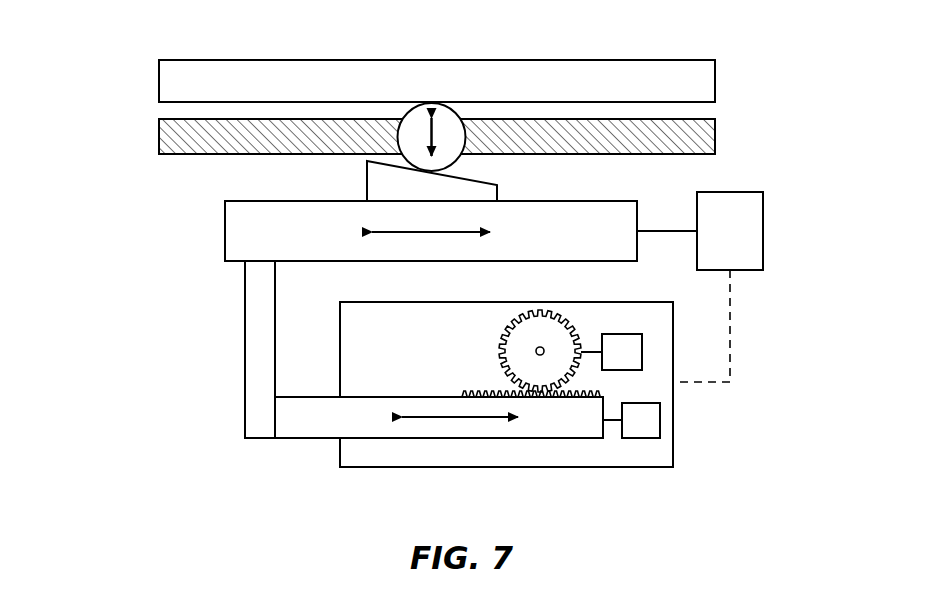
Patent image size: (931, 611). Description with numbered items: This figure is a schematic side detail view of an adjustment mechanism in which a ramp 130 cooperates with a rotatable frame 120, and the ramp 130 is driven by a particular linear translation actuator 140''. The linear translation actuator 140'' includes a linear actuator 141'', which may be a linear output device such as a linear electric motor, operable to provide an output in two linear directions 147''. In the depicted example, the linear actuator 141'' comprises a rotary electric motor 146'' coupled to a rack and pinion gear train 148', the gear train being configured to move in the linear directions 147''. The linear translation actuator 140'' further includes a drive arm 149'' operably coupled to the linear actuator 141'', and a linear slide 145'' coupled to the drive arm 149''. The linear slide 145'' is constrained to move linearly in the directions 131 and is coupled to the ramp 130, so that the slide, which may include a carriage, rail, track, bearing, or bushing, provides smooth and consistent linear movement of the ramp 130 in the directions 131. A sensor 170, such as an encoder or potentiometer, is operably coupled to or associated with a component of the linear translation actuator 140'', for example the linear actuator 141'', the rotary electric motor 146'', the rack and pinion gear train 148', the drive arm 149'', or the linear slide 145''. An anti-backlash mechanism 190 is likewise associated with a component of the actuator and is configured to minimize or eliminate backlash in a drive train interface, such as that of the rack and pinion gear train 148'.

The rotatable frame 120 is at (715, 80).
The ramp 130 is at (470, 170).
The linear directions 131 is at (433, 234).
The linear translation actuator 140'' is at (427, 343).
The linear actuator 141'' is at (525, 390).
The linear slide 145'' is at (380, 231).
The rotary electric motor 146'' is at (614, 320).
The linear directions 147'' is at (439, 450).
The pinion gear 148' is at (461, 333).
The drive arm 149'' is at (191, 349).
The sensor 170 is at (700, 287).
The anti-backlash mechanism 190 is at (638, 438).